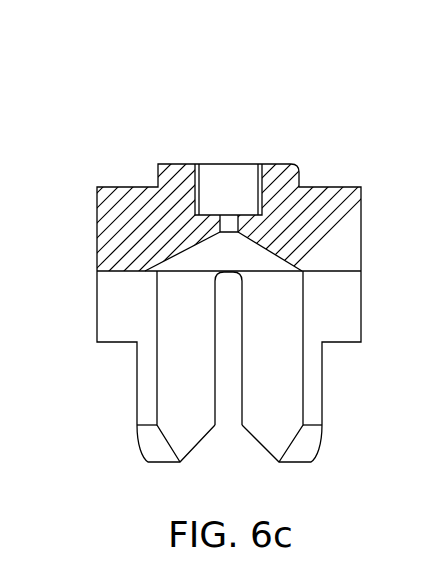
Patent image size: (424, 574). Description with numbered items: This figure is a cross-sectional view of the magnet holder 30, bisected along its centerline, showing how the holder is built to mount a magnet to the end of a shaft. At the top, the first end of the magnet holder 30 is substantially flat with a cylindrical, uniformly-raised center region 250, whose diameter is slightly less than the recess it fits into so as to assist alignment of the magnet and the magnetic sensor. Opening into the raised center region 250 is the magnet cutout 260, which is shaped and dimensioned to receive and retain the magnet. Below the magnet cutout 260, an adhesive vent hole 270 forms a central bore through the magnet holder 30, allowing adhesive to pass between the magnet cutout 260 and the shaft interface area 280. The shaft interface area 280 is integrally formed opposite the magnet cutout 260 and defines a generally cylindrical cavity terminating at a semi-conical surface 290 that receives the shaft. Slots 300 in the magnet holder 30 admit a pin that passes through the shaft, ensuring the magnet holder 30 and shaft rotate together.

The magnet holder 30 is at (315, 115).
The raised center region 250 is at (161, 170).
The magnet cutout 260 is at (222, 190).
The adhesive vent hole 270 is at (231, 222).
The shaft interface area 280 is at (182, 372).
The semi-conical surface 290 is at (247, 264).
The slots 300 is at (224, 392).